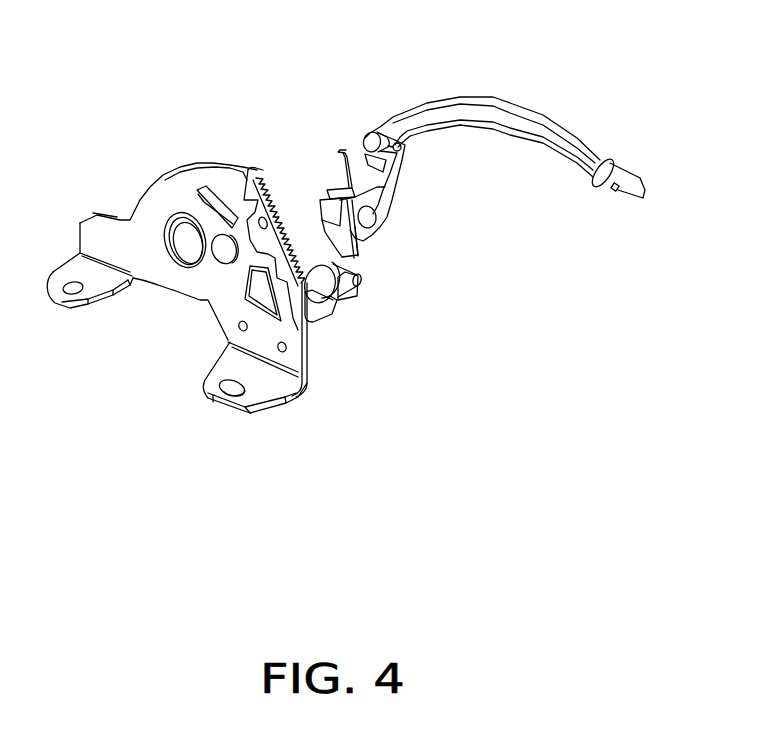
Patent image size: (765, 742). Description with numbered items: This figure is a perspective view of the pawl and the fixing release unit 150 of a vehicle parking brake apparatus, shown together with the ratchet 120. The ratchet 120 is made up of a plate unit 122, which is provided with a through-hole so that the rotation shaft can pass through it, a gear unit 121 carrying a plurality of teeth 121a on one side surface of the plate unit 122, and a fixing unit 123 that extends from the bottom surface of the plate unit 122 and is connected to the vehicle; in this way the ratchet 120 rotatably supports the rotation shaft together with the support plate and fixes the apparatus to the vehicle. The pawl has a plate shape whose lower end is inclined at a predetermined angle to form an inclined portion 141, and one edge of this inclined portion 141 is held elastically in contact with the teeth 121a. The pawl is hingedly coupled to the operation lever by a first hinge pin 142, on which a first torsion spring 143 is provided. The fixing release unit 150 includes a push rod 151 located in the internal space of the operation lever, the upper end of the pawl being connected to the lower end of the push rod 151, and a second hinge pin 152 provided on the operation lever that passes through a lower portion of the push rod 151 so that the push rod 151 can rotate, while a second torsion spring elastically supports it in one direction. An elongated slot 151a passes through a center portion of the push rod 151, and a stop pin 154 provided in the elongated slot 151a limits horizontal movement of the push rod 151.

The ratchet 120 is at (180, 281).
The gear unit 121 is at (256, 201).
The teeth 121a is at (283, 185).
The plate unit 122 is at (175, 197).
The fixing unit 123 is at (267, 383).
The inclined portion 141 is at (322, 325).
The first hinge pin 142 is at (330, 303).
The first torsion spring 143 is at (340, 285).
The fixing release unit 150 is at (505, 123).
The push rod 151 is at (523, 114).
The elongated slot 151a is at (400, 148).
The second hinge pin 152 is at (383, 247).
The stop pin 154 is at (368, 135).